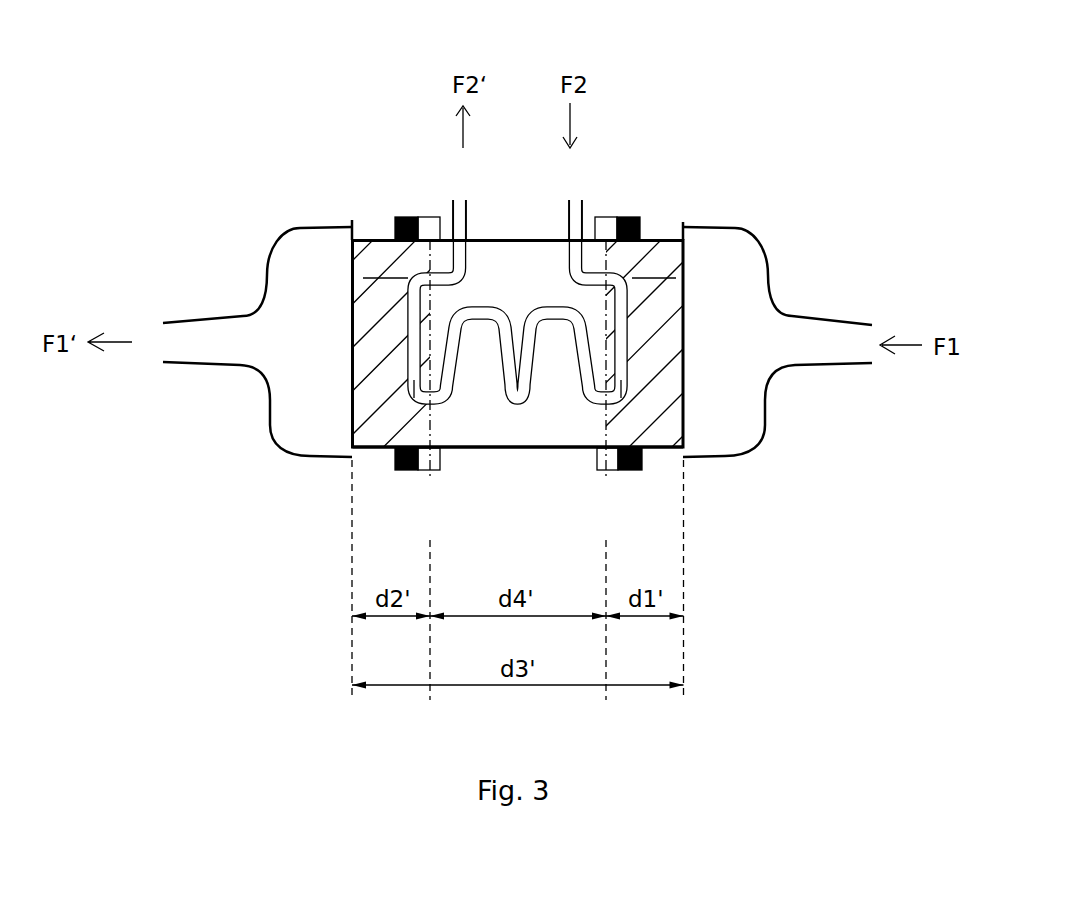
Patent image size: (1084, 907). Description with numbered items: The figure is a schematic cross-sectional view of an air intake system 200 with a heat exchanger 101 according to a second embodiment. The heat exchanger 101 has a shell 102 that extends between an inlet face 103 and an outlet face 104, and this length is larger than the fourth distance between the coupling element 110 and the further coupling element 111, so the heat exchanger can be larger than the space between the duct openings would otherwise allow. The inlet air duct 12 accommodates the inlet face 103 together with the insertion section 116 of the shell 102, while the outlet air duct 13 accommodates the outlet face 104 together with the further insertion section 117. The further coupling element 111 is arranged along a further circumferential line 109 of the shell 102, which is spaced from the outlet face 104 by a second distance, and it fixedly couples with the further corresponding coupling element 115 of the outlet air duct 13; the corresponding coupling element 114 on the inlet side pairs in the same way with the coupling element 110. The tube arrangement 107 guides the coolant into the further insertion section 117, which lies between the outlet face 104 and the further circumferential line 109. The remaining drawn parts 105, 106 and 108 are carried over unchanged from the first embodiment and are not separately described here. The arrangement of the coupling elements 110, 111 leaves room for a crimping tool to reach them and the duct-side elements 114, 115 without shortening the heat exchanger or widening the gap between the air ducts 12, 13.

The air intake system 200 is at (152, 77).
The heat exchanger 101 is at (488, 228).
The shell 102 is at (523, 448).
The inlet face 103 is at (687, 307).
The outlet face 104 is at (350, 354).
The outlet tube 105 is at (567, 218).
The inlet tube 106 is at (452, 203).
The tube arrangement 107 is at (560, 404).
The right channel section 108 is at (606, 410).
The further circumferential line 109 is at (431, 413).
The coupling element 110 is at (610, 217).
The further coupling element 111 is at (422, 217).
The corresponding coupling element 114 is at (637, 217).
The further corresponding coupling element 115 is at (400, 217).
The insertion section 116 is at (654, 265).
The further insertion section 117 is at (386, 265).
The inlet air duct 12 is at (770, 288).
The outlet air duct 13 is at (267, 283).